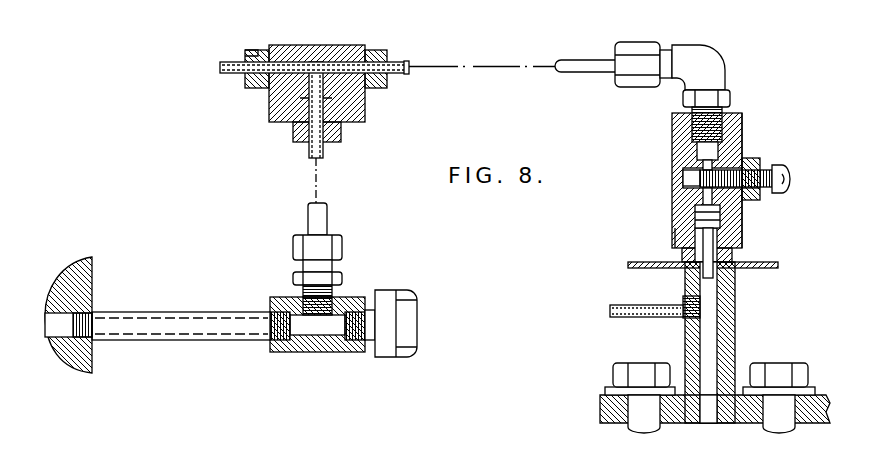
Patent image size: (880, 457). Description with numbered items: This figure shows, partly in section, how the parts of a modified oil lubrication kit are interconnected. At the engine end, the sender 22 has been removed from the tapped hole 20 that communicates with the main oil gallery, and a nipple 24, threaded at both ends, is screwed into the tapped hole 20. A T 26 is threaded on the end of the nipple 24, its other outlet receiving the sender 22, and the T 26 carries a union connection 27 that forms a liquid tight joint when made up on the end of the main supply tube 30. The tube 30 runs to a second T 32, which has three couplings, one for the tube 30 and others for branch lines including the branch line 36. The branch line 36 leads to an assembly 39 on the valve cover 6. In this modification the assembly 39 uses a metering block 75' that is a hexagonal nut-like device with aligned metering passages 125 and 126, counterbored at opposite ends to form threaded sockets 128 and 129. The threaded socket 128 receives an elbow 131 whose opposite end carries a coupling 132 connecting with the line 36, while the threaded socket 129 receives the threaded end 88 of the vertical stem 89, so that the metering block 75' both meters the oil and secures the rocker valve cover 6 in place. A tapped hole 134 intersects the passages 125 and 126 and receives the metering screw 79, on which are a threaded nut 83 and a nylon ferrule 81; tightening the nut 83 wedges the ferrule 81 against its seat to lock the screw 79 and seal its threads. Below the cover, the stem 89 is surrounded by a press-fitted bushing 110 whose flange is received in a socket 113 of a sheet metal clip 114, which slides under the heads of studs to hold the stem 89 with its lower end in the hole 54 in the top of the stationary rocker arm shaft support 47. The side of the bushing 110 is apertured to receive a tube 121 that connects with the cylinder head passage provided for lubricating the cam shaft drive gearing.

The T 32 is at (336, 22).
The branch line 36 is at (397, 62).
The main supply tube 30 is at (322, 220).
The union connection 27 is at (342, 249).
The T 26 is at (311, 352).
The nipple 24 is at (216, 312).
The tapped hole 20 is at (92, 294).
The sender 22 is at (406, 294).
The coupling 132 is at (629, 42).
The elbow 131 is at (718, 58).
The assembly 39 is at (744, 99).
The metering block 75' is at (727, 177).
The threaded socket 128 is at (692, 131).
The tapped hole 134 is at (745, 152).
The metering passage 125 is at (685, 171).
The metering screw 79 is at (788, 176).
The nut 83 is at (757, 164).
The ferrule 81 is at (750, 196).
The metering passage 126 is at (700, 200).
The threaded end 88 is at (722, 241).
The threaded socket 129 is at (685, 238).
The valve cover 6 is at (771, 264).
The bushing 110 is at (735, 333).
The stem 89 is at (727, 292).
The tube 121 is at (640, 318).
The rocker arm shaft support 47 is at (600, 410).
The hole 54 is at (698, 423).
The clip 114 is at (612, 386).
The socket 113 is at (741, 384).